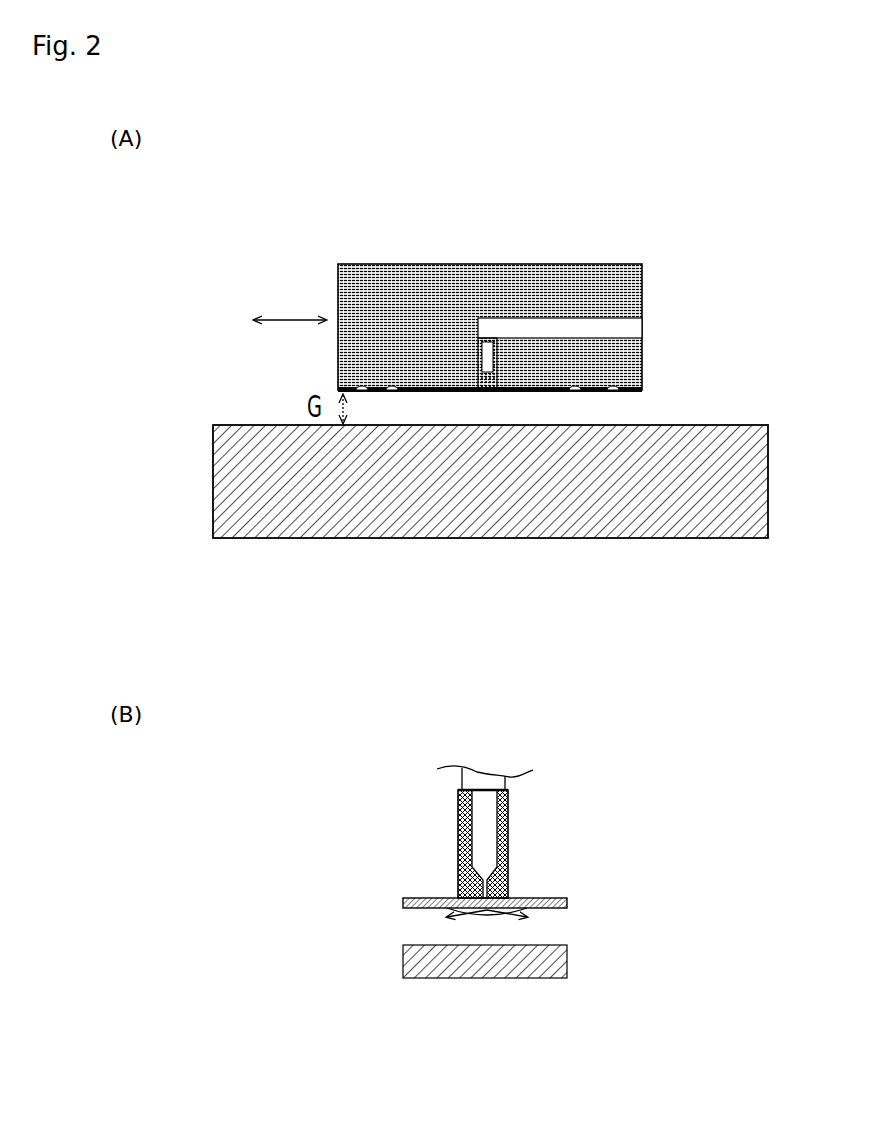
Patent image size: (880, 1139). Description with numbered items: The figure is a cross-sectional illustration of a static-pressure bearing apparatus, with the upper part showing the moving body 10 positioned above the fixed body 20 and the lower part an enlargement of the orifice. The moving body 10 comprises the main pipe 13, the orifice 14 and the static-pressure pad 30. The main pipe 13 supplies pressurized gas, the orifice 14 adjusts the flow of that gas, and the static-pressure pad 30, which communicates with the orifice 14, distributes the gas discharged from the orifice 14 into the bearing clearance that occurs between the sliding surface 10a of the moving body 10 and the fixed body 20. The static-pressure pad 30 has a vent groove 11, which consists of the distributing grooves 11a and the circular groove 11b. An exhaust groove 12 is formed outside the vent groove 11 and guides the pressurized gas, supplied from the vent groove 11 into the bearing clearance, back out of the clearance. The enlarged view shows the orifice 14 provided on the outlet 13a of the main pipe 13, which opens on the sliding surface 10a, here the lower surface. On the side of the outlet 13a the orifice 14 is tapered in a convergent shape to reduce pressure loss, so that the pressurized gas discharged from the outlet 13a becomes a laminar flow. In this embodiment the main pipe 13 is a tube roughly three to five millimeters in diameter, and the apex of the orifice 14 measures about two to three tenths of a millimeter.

The moving body 10 is at (510, 280).
The sliding surface 10a is at (627, 392).
The vent groove 11 is at (507, 392).
The distributing grooves 11a is at (435, 392).
The circular groove 11b is at (392, 392).
The exhaust groove 12 is at (362, 392).
The main pipe 13 is at (568, 320).
The outlet 13a is at (463, 388).
The orifice 14 is at (495, 337).
The fixed body 20 is at (741, 433).
The static-pressure pad 30 is at (550, 406).